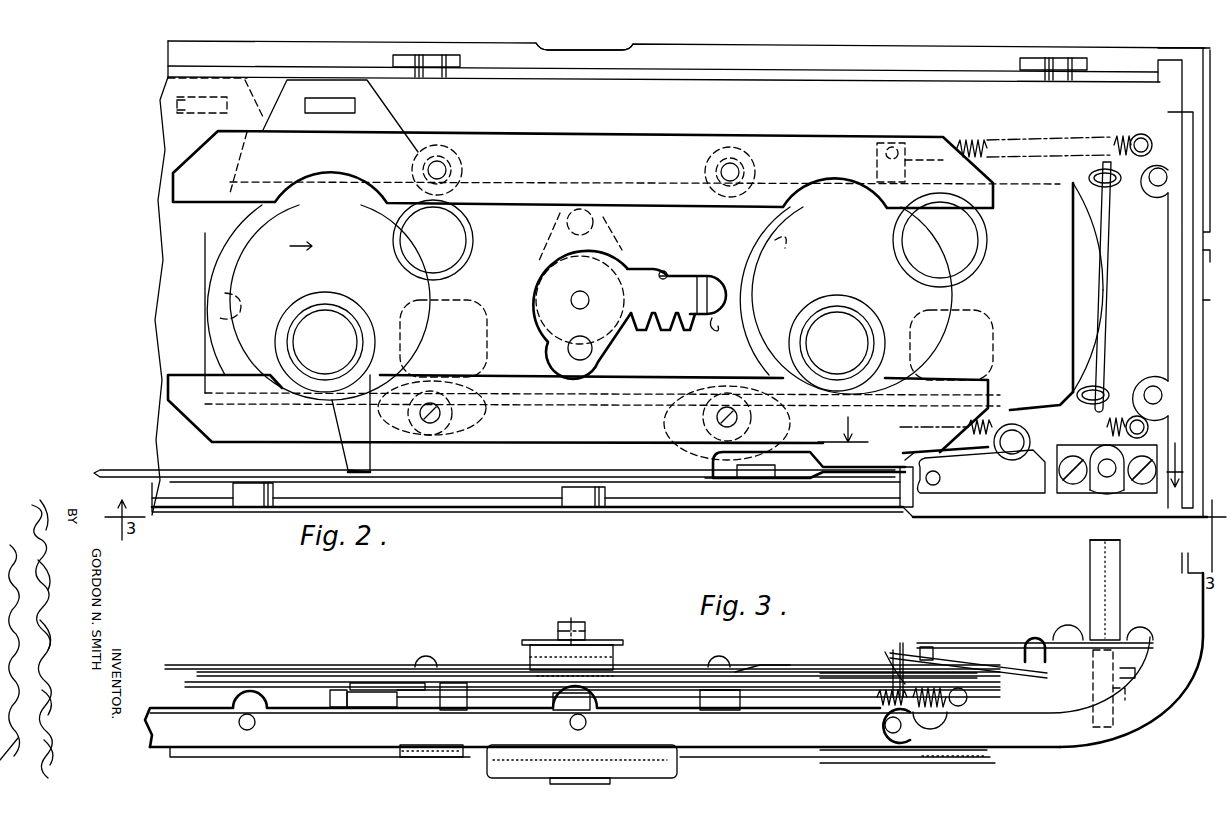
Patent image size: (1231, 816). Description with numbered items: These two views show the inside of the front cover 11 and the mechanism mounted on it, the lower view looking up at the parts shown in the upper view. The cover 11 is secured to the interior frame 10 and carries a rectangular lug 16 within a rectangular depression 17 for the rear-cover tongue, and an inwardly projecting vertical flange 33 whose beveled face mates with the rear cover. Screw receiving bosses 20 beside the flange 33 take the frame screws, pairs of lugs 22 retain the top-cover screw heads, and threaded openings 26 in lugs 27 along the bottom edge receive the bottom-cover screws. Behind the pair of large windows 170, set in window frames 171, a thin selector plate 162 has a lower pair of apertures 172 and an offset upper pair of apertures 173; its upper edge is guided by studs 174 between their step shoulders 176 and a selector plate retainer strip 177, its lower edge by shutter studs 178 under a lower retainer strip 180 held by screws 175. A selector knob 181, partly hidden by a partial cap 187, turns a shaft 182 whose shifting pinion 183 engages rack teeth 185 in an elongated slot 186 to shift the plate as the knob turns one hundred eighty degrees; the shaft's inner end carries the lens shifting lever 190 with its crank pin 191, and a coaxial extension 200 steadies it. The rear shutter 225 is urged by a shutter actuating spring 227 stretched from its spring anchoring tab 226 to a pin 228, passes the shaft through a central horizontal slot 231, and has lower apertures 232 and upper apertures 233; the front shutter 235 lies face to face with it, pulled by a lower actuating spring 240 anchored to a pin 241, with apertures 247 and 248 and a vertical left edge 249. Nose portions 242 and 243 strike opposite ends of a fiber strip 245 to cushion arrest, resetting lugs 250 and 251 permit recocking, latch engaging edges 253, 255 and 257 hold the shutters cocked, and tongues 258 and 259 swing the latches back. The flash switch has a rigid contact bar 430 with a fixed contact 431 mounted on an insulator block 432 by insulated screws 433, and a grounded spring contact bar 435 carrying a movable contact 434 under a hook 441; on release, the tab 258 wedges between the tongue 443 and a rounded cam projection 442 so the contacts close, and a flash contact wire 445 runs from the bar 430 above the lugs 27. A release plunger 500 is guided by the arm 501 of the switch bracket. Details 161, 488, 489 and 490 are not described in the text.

In FIG. 2, the interior frame 10 is at (1001, 451).
In FIG. 2, the front cover 11 is at (805, 46).
In FIG. 3, the front cover 11 is at (1062, 750).
In FIG. 2, the rectangular lug 16 is at (1214, 256).
In FIG. 2, the rectangular depression 17 is at (1204, 300).
In FIG. 2, the screw receiving bosses 20 is at (1158, 187).
In FIG. 2, the lugs 22 is at (447, 55).
In FIG. 3, the threaded openings 26 is at (256, 723).
In FIG. 2, the lugs 27 is at (233, 491).
In FIG. 2, the vertical flange 33 is at (1192, 312).
In FIG. 3, the vertical flange 33 is at (1185, 560).
In FIG. 2, the slot 161 is at (177, 106).
In FIG. 2, the selector plate 162 is at (303, 237).
In FIG. 3, the selector plate 162 is at (197, 674).
In FIG. 2, the windows 170 is at (772, 239).
In FIG. 3, the window frames 171 is at (266, 757).
In FIG. 2, the lower pair of apertures 172 is at (332, 298).
In FIG. 2, the upper pair of apertures 173 is at (476, 244).
In FIG. 2, the studs 174 is at (446, 170).
In FIG. 2, the screws 175 is at (442, 416).
In FIG. 3, the screws 175 is at (430, 657).
In FIG. 2, the step shoulders 176 is at (446, 152).
In FIG. 2, the selector plate retainer strip 177 is at (598, 131).
In FIG. 3, the shutter studs 178 is at (440, 705).
In FIG. 2, the lower selector plate retainer strip 180 is at (541, 446).
In FIG. 3, the lower selector plate retainer strip 180 is at (185, 665).
In FIG. 3, the selector knob 181 is at (490, 762).
In FIG. 3, the shaft 182 is at (556, 705).
In FIG. 3, the selector plate shifting pinion 183 is at (622, 660).
In FIG. 2, the rack teeth 185 is at (662, 335).
In FIG. 2, the elongated slot 186 is at (718, 331).
In FIG. 3, the partial cap 187 is at (677, 774).
In FIG. 2, the lens shifting lever 190 is at (540, 320).
In FIG. 3, the lens shifting lever 190 is at (605, 640).
In FIG. 2, the crank pin 191 is at (594, 222).
In FIG. 3, the crank pin 191 is at (573, 620).
In FIG. 2, the coaxial extension 200 is at (581, 291).
In FIG. 3, the coaxial extension 200 is at (556, 630).
In FIG. 2, the rear shutter 225 is at (207, 294).
In FIG. 3, the rear shutter 225 is at (205, 686).
In FIG. 2, the spring anchoring tab 226 is at (886, 143).
In FIG. 2, the shutter actuating spring 227 is at (970, 140).
In FIG. 2, the pin 228 is at (1141, 134).
In FIG. 2, the central horizontal slot 231 is at (667, 276).
In FIG. 2, the lower apertures 232 is at (470, 304).
In FIG. 2, the upper pair of apertures 233 is at (415, 236).
In FIG. 3, the front shutter 235 is at (330, 697).
In FIG. 2, the lower actuating spring 240 is at (1025, 441).
In FIG. 3, the lower actuating spring 240 is at (968, 697).
In FIG. 2, the pin 241 is at (1137, 417).
In FIG. 3, the pin 241 is at (1128, 705).
In FIG. 2, the nose portion 242 is at (1103, 336).
In FIG. 2, the nose portion 243 is at (1098, 268).
In FIG. 2, the fiber strip 245 is at (1104, 298).
In FIG. 2, the aperture 247 is at (800, 312).
In FIG. 2, the aperture 248 is at (852, 300).
In FIG. 2, the vertical left edge 249 is at (358, 215).
In FIG. 2, the resetting lug 250 is at (372, 465).
In FIG. 3, the resetting lug 250 is at (370, 683).
In FIG. 3, the resetting lug 251 is at (374, 698).
In FIG. 2, the secondary latch engaging edge 253 is at (712, 481).
In FIG. 3, the secondary latch engaging edge 253 is at (698, 705).
In FIG. 2, the vertical edge 255 is at (890, 461).
In FIG. 3, the vertical edge 255 is at (888, 672).
In FIG. 2, the primary latch engaging edge 257 is at (870, 480).
In FIG. 3, the primary latch engaging edge 257 is at (880, 710).
In FIG. 3, the tongue 258 is at (900, 730).
In FIG. 2, the tongue 259 is at (742, 479).
In FIG. 3, the tongue 259 is at (760, 672).
In FIG. 2, the rigid contact bar 430 is at (988, 486).
In FIG. 3, the rigid contact bar 430 is at (975, 643).
In FIG. 3, the fixed contact 431 is at (927, 647).
In FIG. 3, the insulator block 432 is at (1130, 664).
In FIG. 2, the insulated screws 433 is at (1073, 486).
In FIG. 3, the insulated screws 433 is at (1068, 626).
In FIG. 3, the movable contact 434 is at (903, 643).
In FIG. 2, the spring contact bar 435 is at (920, 460).
In FIG. 3, the spring contact bar 435 is at (960, 662).
In FIG. 2, the hook 441 is at (906, 508).
In FIG. 3, the hook 441 is at (895, 650).
In FIG. 3, the rounded cam projection 442 is at (935, 718).
In FIG. 3, the tongue 443 is at (892, 660).
In FIG. 2, the flash contact wire 445 is at (110, 470).
In FIG. 3, the flash contact wire 445 is at (1033, 640).
In FIG. 2, the top plate 488 is at (720, 50).
In FIG. 2, the plate edge 489 is at (672, 80).
In FIG. 2, the notch 490 is at (632, 44).
In FIG. 2, the plunger 500 is at (1107, 469).
In FIG. 3, the plunger 500 is at (1090, 545).
In FIG. 3, the arm 501 is at (1090, 574).